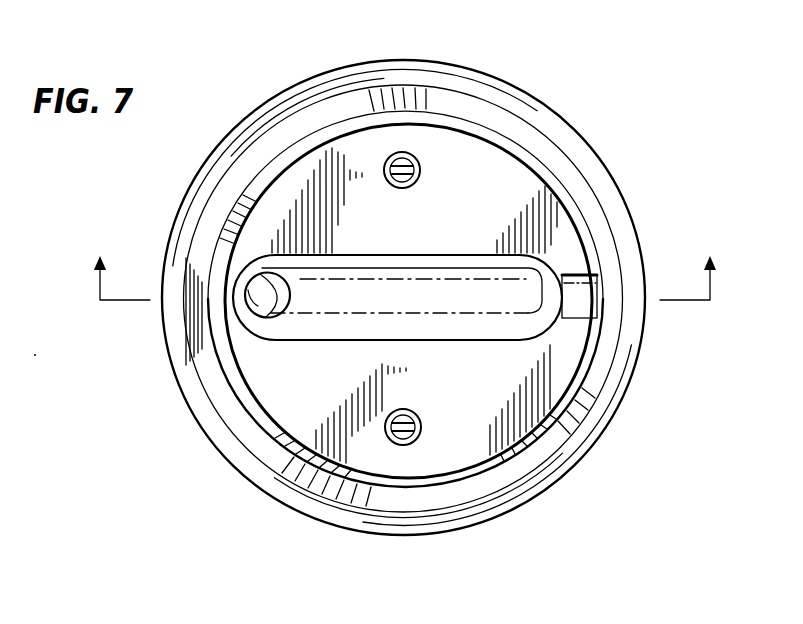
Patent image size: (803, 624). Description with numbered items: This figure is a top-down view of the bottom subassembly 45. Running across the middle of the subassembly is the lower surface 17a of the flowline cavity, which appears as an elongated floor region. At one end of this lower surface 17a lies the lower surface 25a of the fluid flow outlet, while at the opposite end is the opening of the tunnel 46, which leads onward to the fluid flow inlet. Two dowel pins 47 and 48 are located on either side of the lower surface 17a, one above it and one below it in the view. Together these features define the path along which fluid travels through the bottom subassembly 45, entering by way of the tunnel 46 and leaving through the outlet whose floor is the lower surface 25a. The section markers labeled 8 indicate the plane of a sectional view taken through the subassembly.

The bottom subassembly 45 is at (572, 112).
The lower surface of the flowline cavity 17a is at (540, 276).
The lower surface of the fluid flow outlet 25a is at (588, 308).
The tunnel 46 is at (256, 303).
The dowel pin 47 is at (415, 161).
The dowel pin 48 is at (393, 438).
The section line 8- 8 is at (404, 263).